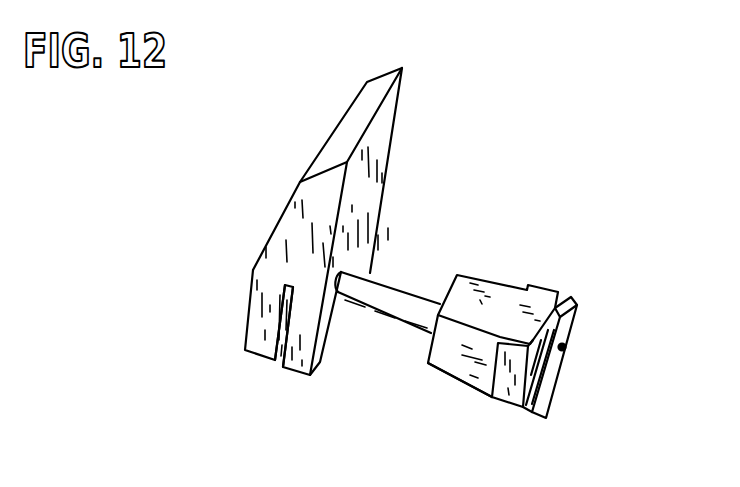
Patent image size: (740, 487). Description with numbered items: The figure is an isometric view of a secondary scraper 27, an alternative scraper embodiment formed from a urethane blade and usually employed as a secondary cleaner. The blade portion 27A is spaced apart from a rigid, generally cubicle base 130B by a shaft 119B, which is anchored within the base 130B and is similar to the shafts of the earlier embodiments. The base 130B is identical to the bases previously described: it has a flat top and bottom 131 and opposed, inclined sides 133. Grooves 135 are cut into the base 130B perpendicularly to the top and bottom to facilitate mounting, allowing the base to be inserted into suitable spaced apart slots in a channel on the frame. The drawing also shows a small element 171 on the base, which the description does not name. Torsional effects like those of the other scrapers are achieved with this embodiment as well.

The secondary scraper 27 is at (424, 211).
The blade portion 27A is at (315, 148).
The shaft 119B is at (380, 311).
The flat top and bottom 131 is at (503, 302).
The inclined side 133 is at (457, 377).
The base 130B is at (478, 387).
The groove 135 is at (568, 300).
The screw 171 is at (567, 352).